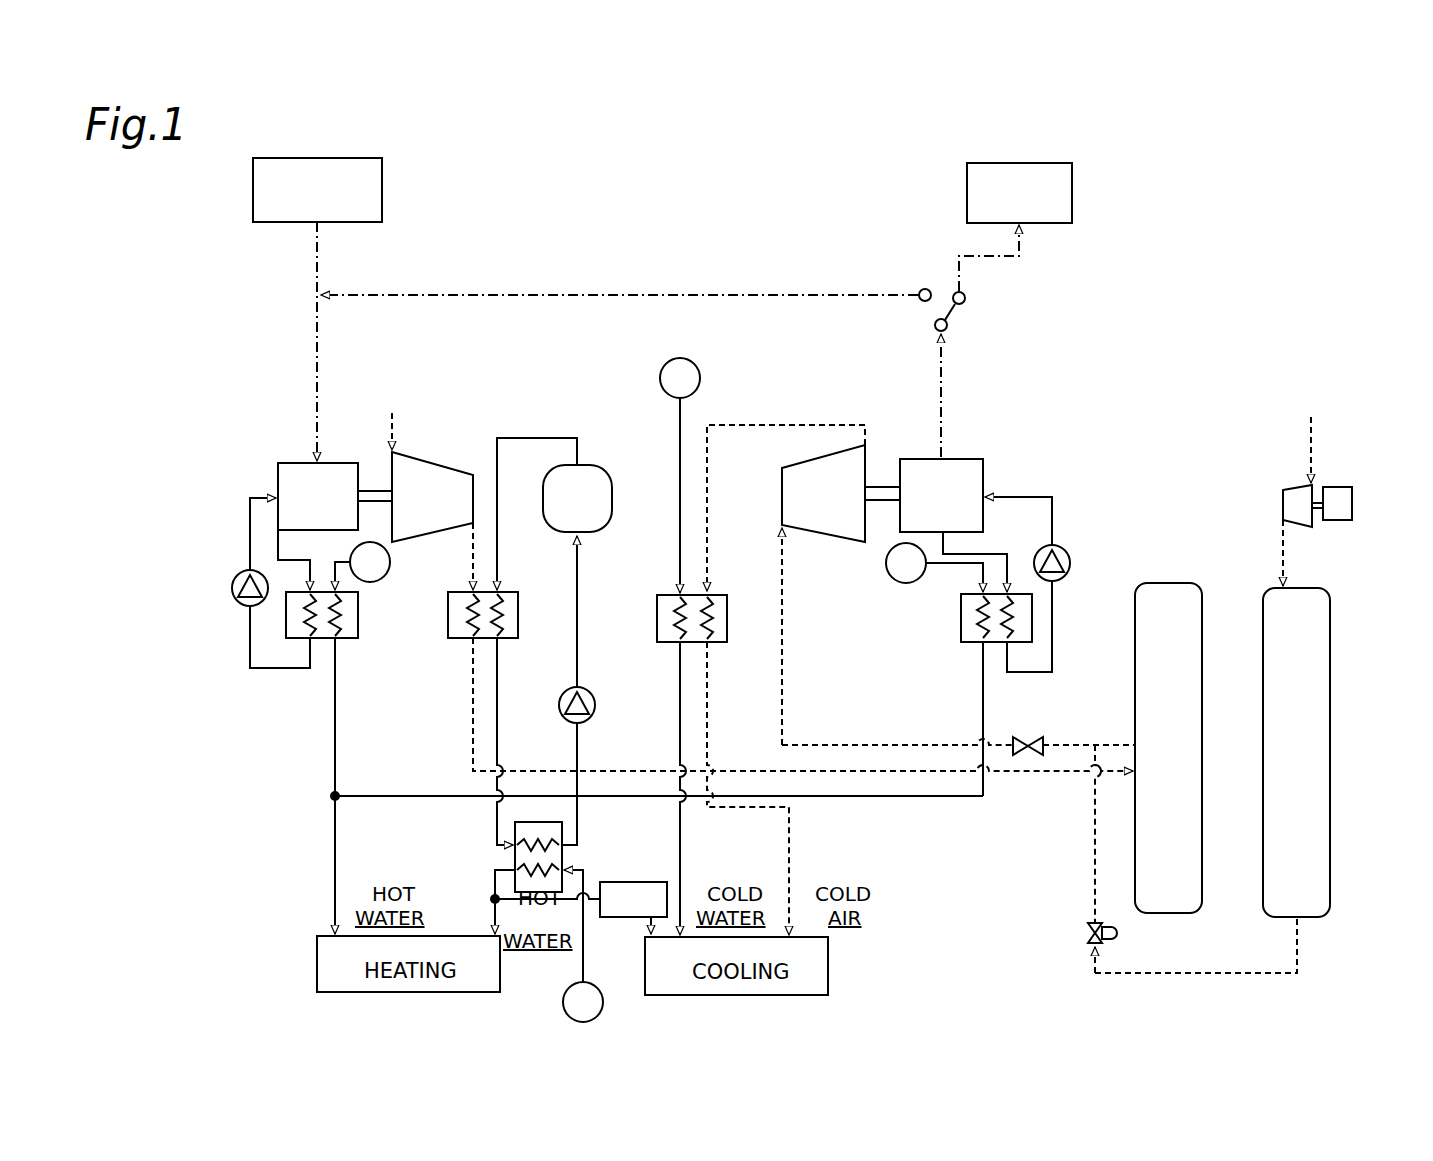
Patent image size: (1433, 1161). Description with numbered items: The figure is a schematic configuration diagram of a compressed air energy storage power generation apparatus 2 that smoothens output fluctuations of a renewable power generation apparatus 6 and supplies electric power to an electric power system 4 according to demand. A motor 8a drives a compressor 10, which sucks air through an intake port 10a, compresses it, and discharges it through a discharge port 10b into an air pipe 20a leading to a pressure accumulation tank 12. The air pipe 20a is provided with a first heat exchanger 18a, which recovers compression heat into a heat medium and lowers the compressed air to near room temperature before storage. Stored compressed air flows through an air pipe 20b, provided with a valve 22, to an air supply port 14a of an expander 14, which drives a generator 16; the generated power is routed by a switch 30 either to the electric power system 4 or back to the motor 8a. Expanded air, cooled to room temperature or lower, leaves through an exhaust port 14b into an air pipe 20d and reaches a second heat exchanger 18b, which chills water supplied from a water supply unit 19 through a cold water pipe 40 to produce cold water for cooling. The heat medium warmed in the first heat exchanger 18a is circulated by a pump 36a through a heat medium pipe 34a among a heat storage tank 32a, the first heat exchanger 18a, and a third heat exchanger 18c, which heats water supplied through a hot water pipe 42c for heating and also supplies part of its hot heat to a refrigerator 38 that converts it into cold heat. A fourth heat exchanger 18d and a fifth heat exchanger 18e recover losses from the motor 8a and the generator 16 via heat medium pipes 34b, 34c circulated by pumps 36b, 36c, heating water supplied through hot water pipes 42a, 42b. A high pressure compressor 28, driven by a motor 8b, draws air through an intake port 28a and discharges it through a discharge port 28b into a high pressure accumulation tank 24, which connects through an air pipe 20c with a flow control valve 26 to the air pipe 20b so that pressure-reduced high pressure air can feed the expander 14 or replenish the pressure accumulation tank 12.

The compressed air energy storage power generation apparatus 2 is at (1143, 325).
The electric power system 4 is at (1072, 190).
The power generation apparatus 6 is at (382, 185).
The motor 8a is at (277, 465).
The motor 8b is at (1352, 503).
The compressor 10 is at (437, 458).
The intake port 10a is at (388, 452).
The discharge port 10b is at (471, 527).
The pressure accumulation tank 12 is at (1202, 765).
The expander 14 is at (827, 533).
The air supply port 14a is at (780, 526).
The exhaust port 14b is at (868, 443).
The generator 16 is at (975, 459).
The first heat exchanger 18a is at (463, 642).
The second heat exchanger 18b is at (727, 642).
The third heat exchanger 18c is at (515, 863).
The fourth heat exchanger 18d is at (327, 640).
The fifth heat exchanger 18e is at (961, 625).
The water supply unit 19 is at (372, 583).
The air pipe 20a is at (473, 745).
The air pipe 20b is at (828, 745).
The air pipe 20c is at (1240, 952).
The air pipe 20d is at (789, 875).
The valve 22 is at (1040, 740).
The high pressure accumulation tank 24 is at (1330, 753).
The flow control valve 26 is at (1088, 933).
The high pressure compressor 28 is at (1283, 510).
The intake port 28a is at (1312, 485).
The discharge port 28b is at (1283, 522).
The switch 30 is at (948, 322).
The heat storage tank 32a is at (612, 490).
The heat medium pipe 34a is at (500, 438).
The heat medium pipe 34b is at (248, 633).
The heat medium pipe 34c is at (1052, 497).
The pump 36a is at (595, 700).
The pump 36b is at (232, 586).
The pump 36c is at (1070, 563).
The refrigerator 38 is at (625, 880).
The cold water pipe 40 is at (680, 872).
The hot water pipe 42a is at (335, 771).
The hot water pipe 42b is at (983, 710).
The hot water pipe 42c is at (583, 946).